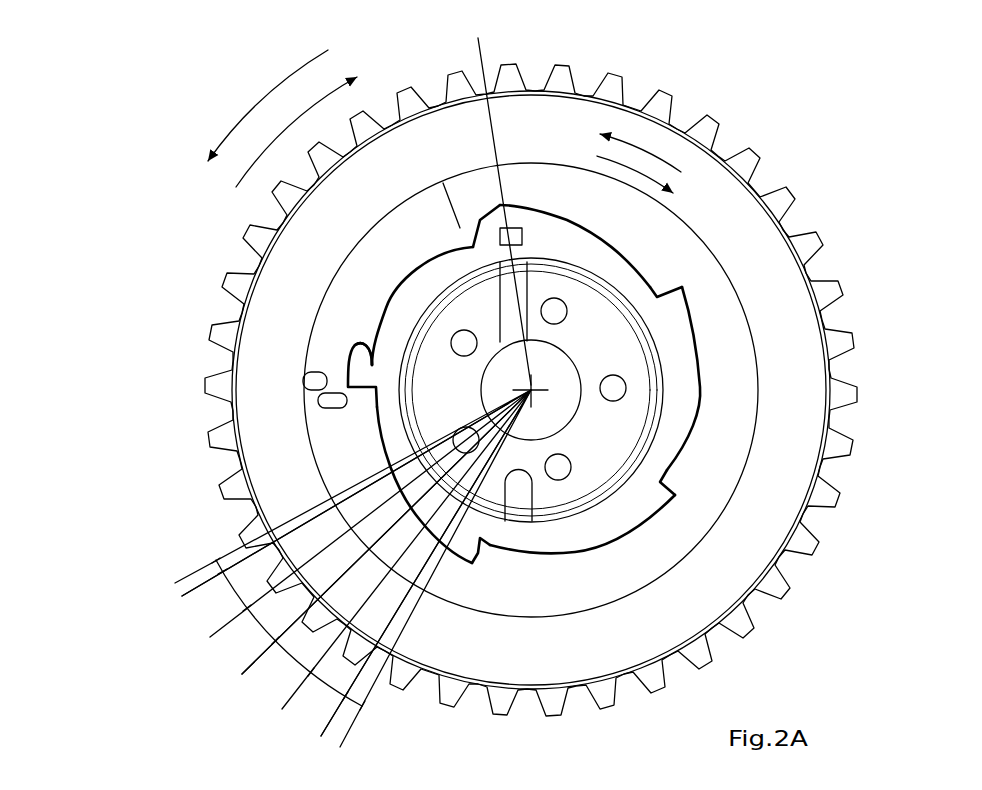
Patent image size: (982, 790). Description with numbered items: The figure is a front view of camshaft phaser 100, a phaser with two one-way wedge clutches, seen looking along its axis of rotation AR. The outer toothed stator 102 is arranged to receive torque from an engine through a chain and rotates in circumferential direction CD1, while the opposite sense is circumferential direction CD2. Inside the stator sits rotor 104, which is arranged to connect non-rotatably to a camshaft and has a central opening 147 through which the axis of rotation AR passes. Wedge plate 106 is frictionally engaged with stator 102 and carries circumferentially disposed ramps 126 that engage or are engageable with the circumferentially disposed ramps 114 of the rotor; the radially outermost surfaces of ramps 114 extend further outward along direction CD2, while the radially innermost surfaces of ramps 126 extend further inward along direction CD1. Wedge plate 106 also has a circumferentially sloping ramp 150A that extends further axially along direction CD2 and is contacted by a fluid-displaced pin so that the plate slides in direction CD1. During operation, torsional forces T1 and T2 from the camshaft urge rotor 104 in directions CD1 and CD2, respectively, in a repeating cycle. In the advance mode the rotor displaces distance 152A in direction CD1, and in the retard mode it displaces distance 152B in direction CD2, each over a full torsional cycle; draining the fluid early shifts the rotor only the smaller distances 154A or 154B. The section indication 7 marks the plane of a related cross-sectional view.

The phaser 100 is at (895, 100).
The stator 102 is at (818, 230).
The rotor 104 is at (685, 385).
The wedge plate 106 is at (335, 273).
The ramps 114 is at (372, 365).
The ramps 126 is at (366, 331).
The central opening 147 is at (507, 372).
The ramp 150A is at (515, 227).
The distance 152A is at (247, 628).
The distance 152B is at (323, 683).
The distance 154A is at (177, 580).
The distance 154B is at (350, 717).
The circumferential direction CD1 is at (328, 93).
The circumferential direction CD2 is at (258, 103).
The torsional force T1 is at (640, 173).
The torsional force T2 is at (653, 147).
The axis of rotation AR is at (531, 388).
The section line 7- 7 is at (478, 38).